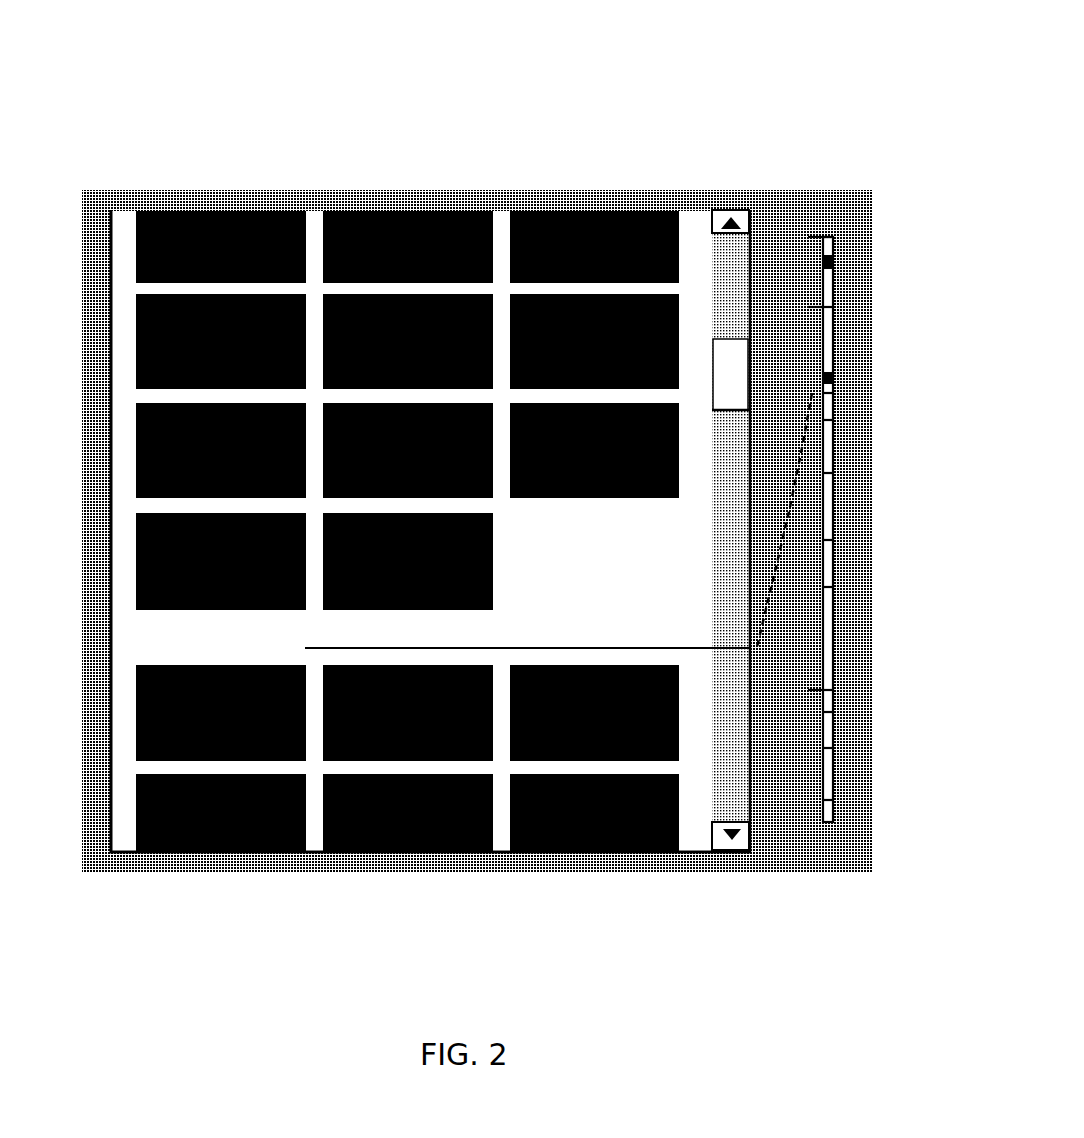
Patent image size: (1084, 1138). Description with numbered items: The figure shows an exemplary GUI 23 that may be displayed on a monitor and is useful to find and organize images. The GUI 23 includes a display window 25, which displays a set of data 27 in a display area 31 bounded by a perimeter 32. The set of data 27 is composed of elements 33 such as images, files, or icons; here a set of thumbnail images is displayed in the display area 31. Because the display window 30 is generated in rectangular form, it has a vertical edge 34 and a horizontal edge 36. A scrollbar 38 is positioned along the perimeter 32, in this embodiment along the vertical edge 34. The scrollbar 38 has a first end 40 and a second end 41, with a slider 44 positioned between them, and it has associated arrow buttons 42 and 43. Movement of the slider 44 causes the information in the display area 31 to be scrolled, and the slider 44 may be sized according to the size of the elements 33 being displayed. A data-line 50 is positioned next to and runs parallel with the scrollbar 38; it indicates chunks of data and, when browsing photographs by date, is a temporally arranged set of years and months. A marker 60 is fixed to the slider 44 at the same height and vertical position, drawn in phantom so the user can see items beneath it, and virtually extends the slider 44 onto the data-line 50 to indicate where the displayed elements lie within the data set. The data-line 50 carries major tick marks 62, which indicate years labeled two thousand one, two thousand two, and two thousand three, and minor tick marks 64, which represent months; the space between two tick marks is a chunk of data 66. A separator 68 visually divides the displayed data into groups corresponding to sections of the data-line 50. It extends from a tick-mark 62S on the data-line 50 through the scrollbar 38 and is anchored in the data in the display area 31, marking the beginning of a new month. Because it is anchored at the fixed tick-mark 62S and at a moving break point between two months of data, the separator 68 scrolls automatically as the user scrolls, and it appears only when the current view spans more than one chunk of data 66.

The GUI 23 is at (462, 98).
The display window 25 is at (297, 194).
The set of data 27 is at (120, 407).
The display window 30 is at (394, 531).
The display area 31 is at (140, 627).
The perimeter 32 is at (110, 483).
The elements 33 is at (473, 667).
The vertical edge 34 is at (771, 506).
The horizontal edge 36 is at (498, 851).
The scrollbar 38 is at (718, 525).
The first end 40 is at (744, 210).
The second end 41 is at (748, 852).
The arrow button 42 is at (730, 218).
The arrow button 43 is at (732, 834).
The slider 44 is at (747, 411).
The data-line 50 is at (828, 262).
The marker 60 is at (832, 348).
The major tick marks 62 is at (827, 233).
The tick-mark 62S is at (832, 378).
The minor tick marks 64 is at (830, 420).
The chunk of data 66 is at (830, 597).
The separator 68 is at (342, 644).